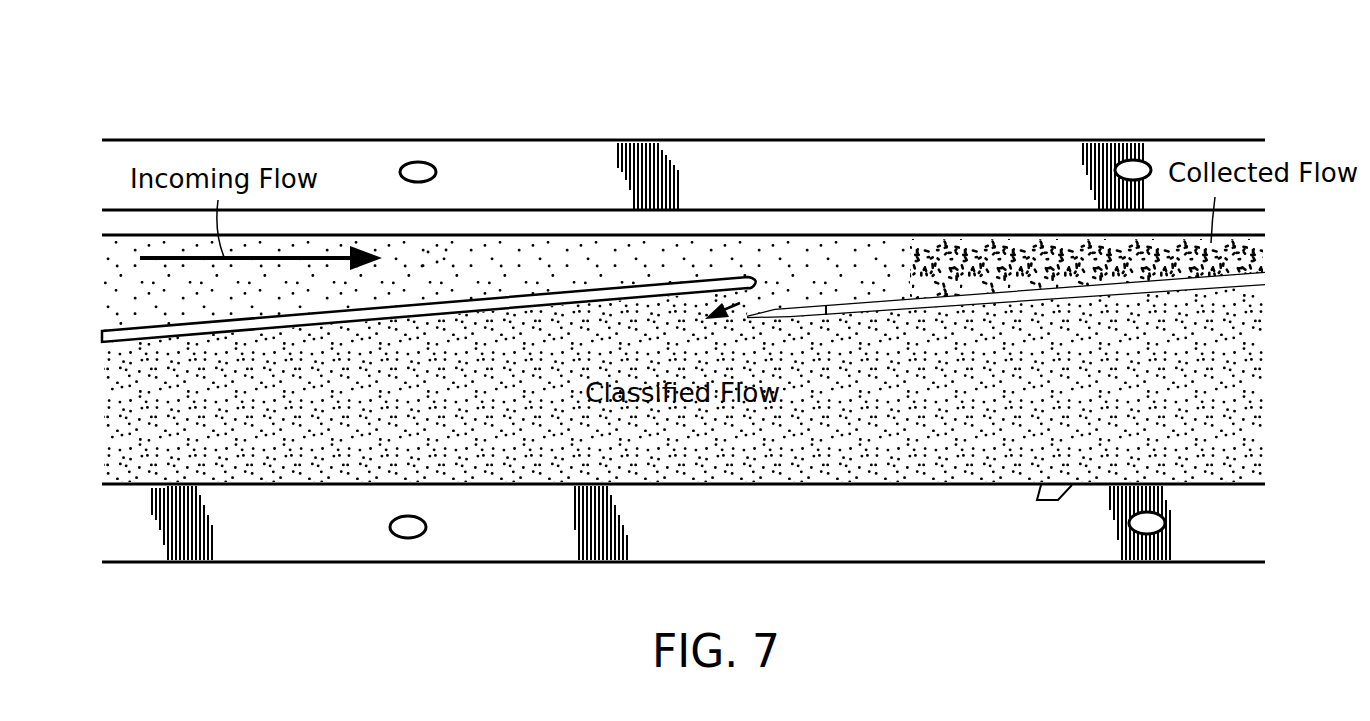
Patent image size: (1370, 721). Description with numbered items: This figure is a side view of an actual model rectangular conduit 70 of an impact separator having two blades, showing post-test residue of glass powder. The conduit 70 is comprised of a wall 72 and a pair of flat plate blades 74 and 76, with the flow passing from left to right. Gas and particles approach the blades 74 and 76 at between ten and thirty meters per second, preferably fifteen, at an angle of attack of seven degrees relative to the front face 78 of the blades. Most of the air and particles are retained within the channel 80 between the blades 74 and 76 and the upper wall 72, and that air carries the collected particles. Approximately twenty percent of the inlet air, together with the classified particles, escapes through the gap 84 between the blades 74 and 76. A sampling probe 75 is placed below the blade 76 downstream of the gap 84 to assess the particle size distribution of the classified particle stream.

The conduit 70 is at (913, 100).
The wall 72 is at (720, 163).
The blade 74 is at (138, 343).
The sampling probe 75 is at (1055, 501).
The blade 76 is at (1235, 290).
The front face 78 is at (570, 272).
The channel 80 is at (430, 257).
The gap 84 is at (740, 303).